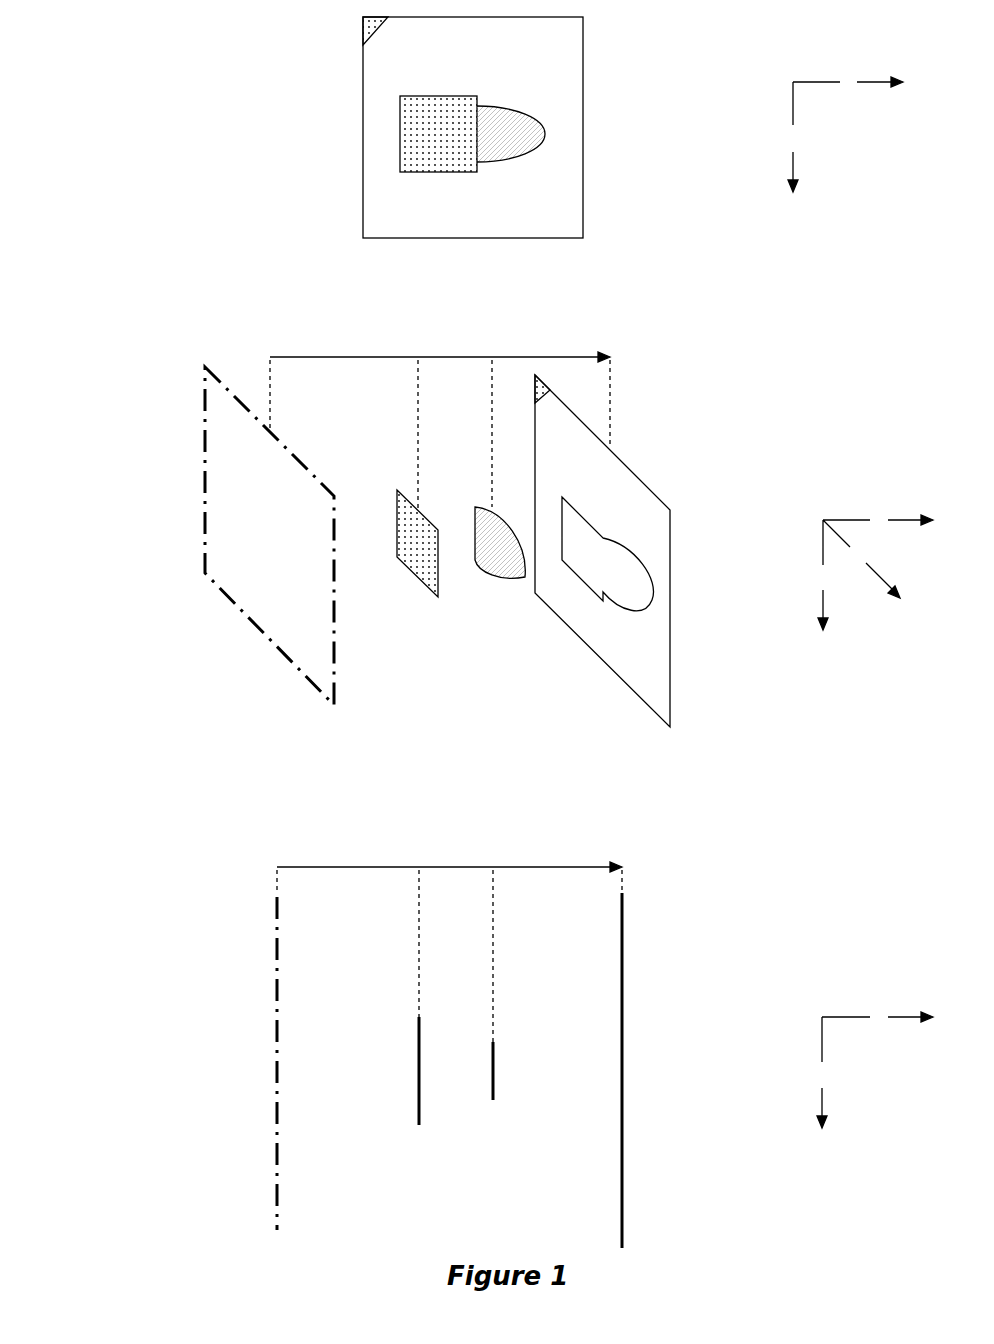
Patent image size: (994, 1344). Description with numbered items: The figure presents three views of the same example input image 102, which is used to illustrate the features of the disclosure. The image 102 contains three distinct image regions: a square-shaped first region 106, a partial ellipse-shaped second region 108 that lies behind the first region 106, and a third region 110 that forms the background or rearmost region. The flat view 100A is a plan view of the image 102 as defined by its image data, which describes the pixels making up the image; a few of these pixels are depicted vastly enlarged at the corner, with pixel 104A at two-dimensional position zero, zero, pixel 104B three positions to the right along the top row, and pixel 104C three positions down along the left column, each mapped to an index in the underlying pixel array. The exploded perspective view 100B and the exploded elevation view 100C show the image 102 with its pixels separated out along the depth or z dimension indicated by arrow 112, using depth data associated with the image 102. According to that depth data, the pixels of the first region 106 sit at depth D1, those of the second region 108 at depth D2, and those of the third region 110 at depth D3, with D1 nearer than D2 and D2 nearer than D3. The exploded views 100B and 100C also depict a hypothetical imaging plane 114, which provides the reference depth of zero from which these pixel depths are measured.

The flat view 100A is at (125, 73).
The exploded perspective view 100B is at (115, 504).
The exploded elevation view 100C is at (114, 932).
The example image 102 is at (680, 77).
The pixel 104A is at (366, 18).
The pixel 104B is at (387, 18).
The pixel 104C is at (363, 34).
The first region 106 is at (415, 1053).
The second region 108 is at (493, 1095).
The third region 110 is at (620, 1053).
The arrow 112 is at (360, 357).
The imaging plane 114 is at (185, 396).